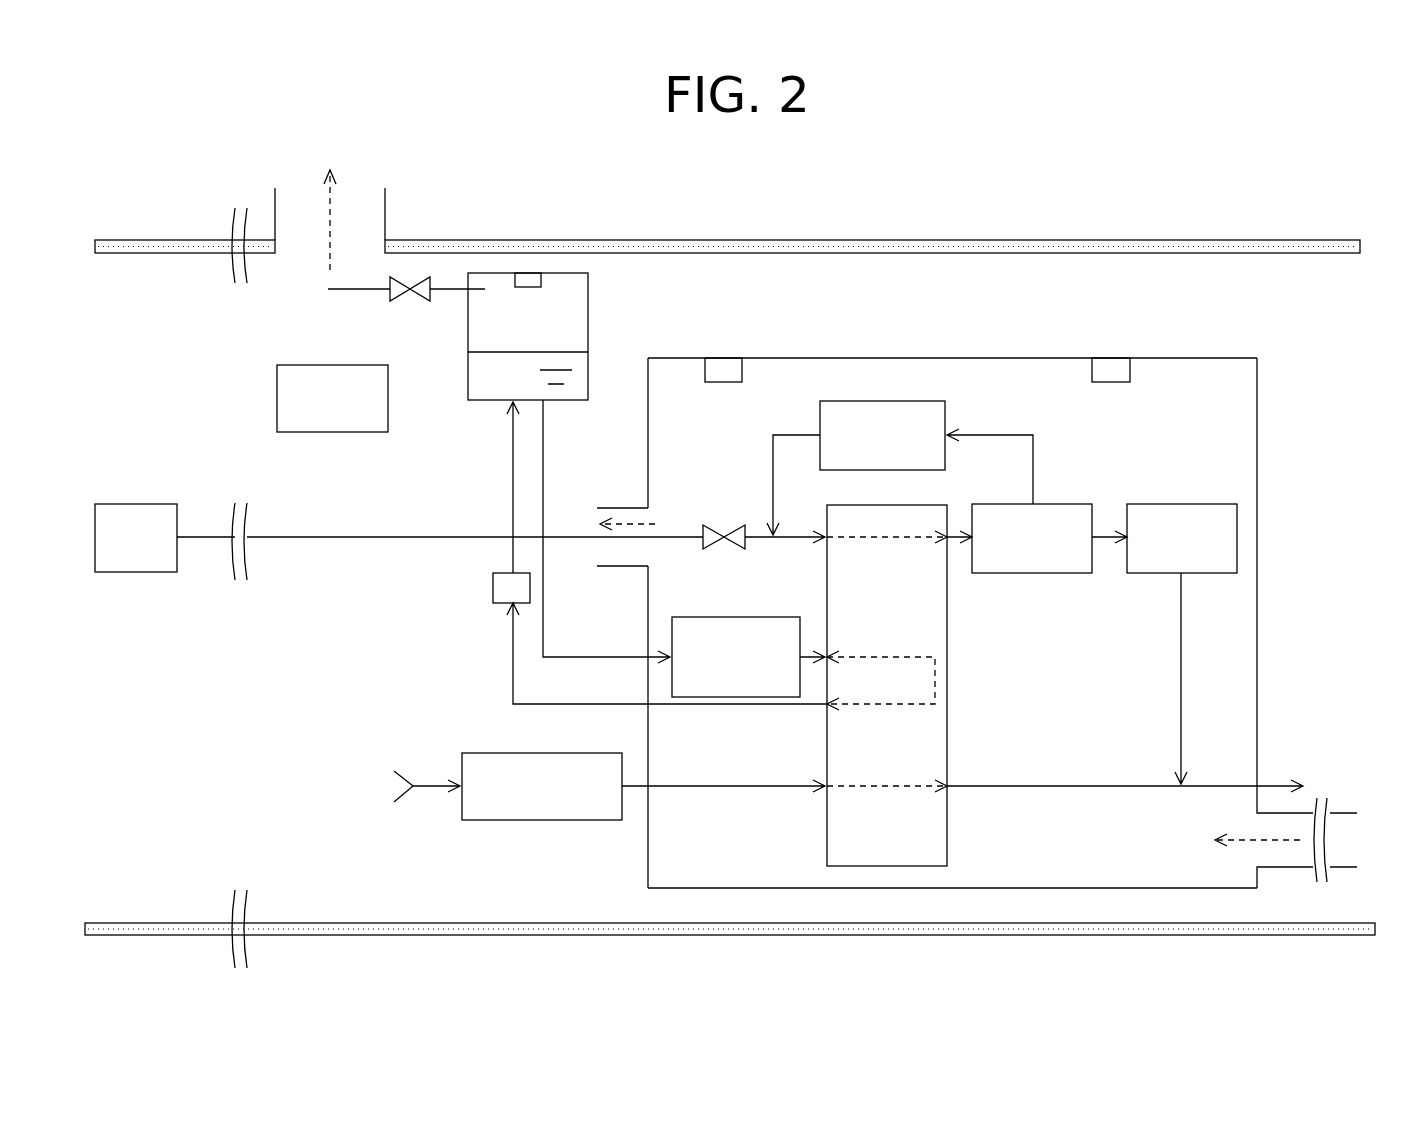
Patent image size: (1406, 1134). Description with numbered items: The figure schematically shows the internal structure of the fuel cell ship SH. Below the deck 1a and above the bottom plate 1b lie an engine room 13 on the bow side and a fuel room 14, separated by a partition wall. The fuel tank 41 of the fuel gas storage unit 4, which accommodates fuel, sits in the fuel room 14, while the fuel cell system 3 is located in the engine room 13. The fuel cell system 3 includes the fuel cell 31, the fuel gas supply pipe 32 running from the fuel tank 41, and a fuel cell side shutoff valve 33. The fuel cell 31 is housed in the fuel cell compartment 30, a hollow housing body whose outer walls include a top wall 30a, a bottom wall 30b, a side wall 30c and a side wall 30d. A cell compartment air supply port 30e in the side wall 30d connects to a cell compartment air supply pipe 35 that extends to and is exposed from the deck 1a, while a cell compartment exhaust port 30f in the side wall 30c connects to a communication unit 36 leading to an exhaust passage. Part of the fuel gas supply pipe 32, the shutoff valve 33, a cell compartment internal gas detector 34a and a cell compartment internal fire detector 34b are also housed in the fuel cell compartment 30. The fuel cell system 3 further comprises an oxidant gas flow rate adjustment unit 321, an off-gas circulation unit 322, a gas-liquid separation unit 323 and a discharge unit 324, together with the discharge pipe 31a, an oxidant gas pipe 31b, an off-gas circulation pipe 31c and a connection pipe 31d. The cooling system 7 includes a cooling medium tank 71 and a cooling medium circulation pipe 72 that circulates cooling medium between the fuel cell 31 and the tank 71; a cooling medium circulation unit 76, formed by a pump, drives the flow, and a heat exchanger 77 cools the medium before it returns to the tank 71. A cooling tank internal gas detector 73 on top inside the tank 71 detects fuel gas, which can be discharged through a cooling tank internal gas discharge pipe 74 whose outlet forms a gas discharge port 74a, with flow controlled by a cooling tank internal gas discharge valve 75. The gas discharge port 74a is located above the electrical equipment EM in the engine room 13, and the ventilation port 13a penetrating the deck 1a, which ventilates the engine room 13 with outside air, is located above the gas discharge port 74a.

The fuel cell ship SH is at (1303, 201).
The deck 1a is at (690, 240).
The bottom plate 1b is at (975, 936).
The engine room 13 is at (1152, 303).
The ventilation port 13a is at (385, 218).
The fuel room 14 is at (143, 306).
The fuel cell system 3 is at (1071, 911).
The fuel cell compartment 30 is at (957, 640).
The top wall 30a is at (1010, 357).
The bottom wall 30b is at (779, 890).
The side wall 30c is at (647, 727).
The side wall 30d is at (1260, 589).
The cell compartment air supply port 30e is at (1258, 855).
The cell compartment exhaust port 30f is at (650, 520).
The fuel cell 31 is at (948, 738).
The discharge pipe 31a is at (1272, 785).
The oxidant gas pipe 31b is at (742, 790).
The off-gas circulation pipe 31c is at (1002, 433).
The connection pipe 31d is at (1097, 574).
The fuel gas supply pipe 32 is at (338, 535).
The oxidant gas flow rate adjustment unit 321 is at (548, 821).
The off-gas circulation unit 322 is at (900, 401).
The gas-liquid separation unit 323 is at (1062, 504).
The discharge unit 324 is at (1197, 504).
The fuel cell side shutoff valve 33 is at (723, 530).
The cell compartment internal gas detector 34a is at (738, 383).
The cell compartment internal fire detector 34b is at (1122, 383).
The cell compartment air supply pipe 35 is at (1346, 812).
The communication unit 36 is at (612, 506).
The fuel gas storage unit 4 is at (136, 523).
The fuel tank 41 is at (130, 575).
The cooling system 7 is at (523, 489).
The cooling medium tank 71 is at (590, 312).
The cooling medium circulation pipe 72 is at (545, 620).
The cooling tank internal gas detector 73 is at (528, 288).
The cooling tank internal gas discharge pipe 74 is at (360, 292).
The gas discharge port 74a is at (314, 298).
The cooling tank internal gas discharge valve 75 is at (412, 302).
The cooling medium circulation unit 76 is at (727, 617).
The heat exchanger 77 is at (492, 586).
The electrical equipment EM is at (388, 400).